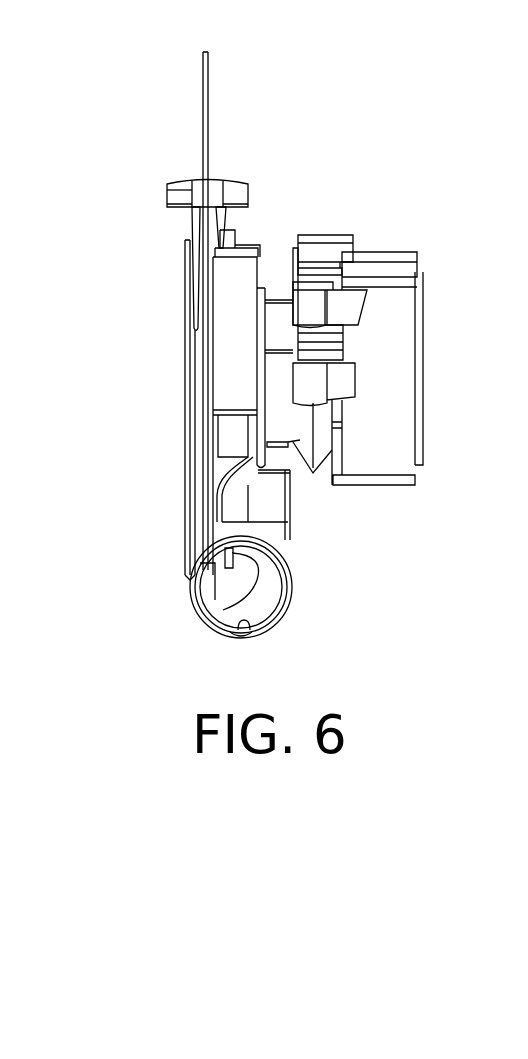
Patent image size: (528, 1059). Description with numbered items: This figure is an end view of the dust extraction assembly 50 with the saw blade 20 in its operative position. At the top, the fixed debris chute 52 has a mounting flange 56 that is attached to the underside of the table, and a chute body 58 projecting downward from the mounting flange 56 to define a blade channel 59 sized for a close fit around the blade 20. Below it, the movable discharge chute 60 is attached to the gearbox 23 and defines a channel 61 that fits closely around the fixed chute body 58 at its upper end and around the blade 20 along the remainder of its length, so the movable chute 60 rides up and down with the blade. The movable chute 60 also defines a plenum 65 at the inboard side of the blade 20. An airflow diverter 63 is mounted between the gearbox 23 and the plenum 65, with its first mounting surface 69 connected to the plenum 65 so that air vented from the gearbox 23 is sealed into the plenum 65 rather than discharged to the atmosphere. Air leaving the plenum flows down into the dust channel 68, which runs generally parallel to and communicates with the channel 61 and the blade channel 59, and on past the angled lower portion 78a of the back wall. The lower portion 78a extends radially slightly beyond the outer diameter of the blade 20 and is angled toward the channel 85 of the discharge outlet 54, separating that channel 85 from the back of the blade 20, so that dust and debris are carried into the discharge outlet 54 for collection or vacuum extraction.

The blade 20 is at (208, 95).
The fixed debris chute 52 is at (233, 188).
The mounting flange 56 is at (180, 192).
The chute body 58 is at (190, 217).
The blade channel 59 is at (212, 218).
The movable discharge chute 60 is at (185, 470).
The channel 61 is at (200, 523).
The plenum 65 is at (235, 357).
The airflow diverter 63 is at (275, 395).
The first mounting surface 69 is at (263, 287).
The gearbox 23 is at (415, 352).
The dust extraction assembly 50 is at (292, 573).
The dust channel 68 is at (188, 572).
The channel 85 is at (277, 592).
The angled lower portion 78a is at (220, 605).
The discharge outlet 54 is at (257, 633).